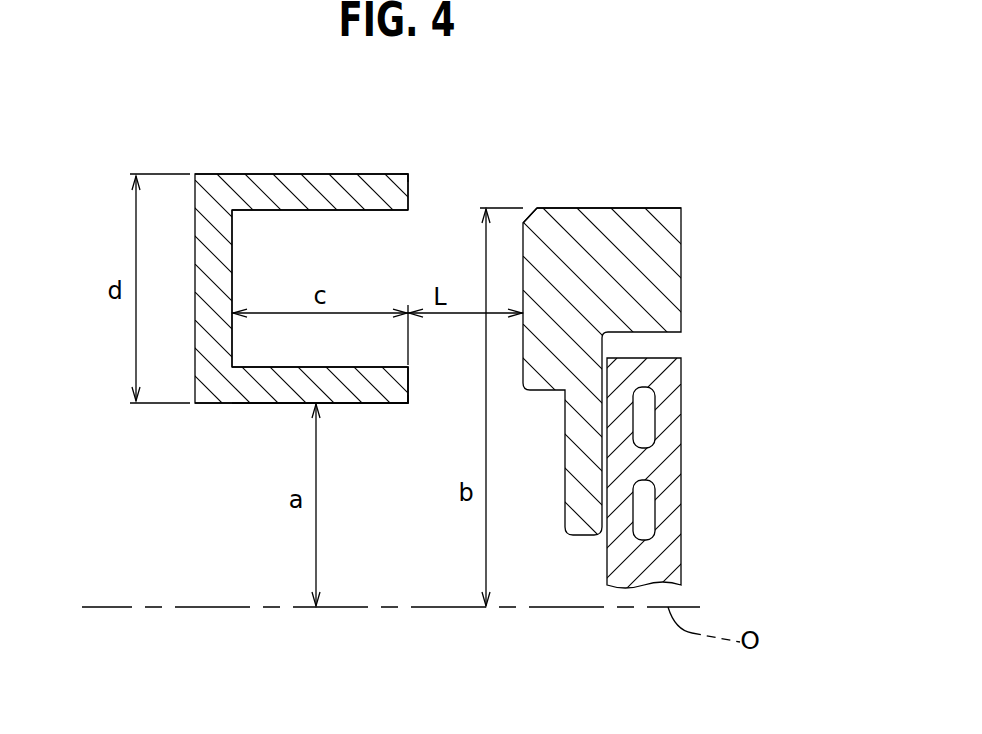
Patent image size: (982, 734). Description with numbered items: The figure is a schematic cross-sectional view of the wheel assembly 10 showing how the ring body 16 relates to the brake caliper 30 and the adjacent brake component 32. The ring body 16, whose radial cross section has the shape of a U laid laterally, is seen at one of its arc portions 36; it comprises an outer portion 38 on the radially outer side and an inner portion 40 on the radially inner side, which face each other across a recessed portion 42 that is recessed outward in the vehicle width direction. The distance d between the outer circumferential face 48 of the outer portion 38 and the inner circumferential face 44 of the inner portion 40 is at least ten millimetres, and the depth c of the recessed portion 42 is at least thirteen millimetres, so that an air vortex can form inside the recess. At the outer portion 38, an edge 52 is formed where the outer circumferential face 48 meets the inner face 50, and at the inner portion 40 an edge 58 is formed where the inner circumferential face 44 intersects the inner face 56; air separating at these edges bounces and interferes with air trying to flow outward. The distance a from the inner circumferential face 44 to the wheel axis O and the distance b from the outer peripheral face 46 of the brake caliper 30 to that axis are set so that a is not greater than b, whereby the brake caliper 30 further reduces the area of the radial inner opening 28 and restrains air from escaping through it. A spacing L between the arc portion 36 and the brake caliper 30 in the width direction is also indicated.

The rotary electric machine / assembly 10 is at (712, 148).
The ring body 16 is at (307, 248).
The radial inner opening 28 is at (205, 553).
The brake caliper 30 is at (702, 260).
The second block member 32 is at (704, 478).
The arc portion 36 is at (280, 157).
The outer portion 38 is at (303, 199).
The inner portion 40 is at (345, 403).
The recessed portion 42 is at (242, 328).
The inner circumferential face 44 is at (268, 403).
The outer peripheral face 46 is at (600, 208).
The outer circumferential face 48 is at (358, 173).
The inner face of the outer portion 50 is at (409, 190).
The edge 52 is at (409, 173).
The inner face of the inner portion 56 is at (409, 389).
The edge 58 is at (409, 402).